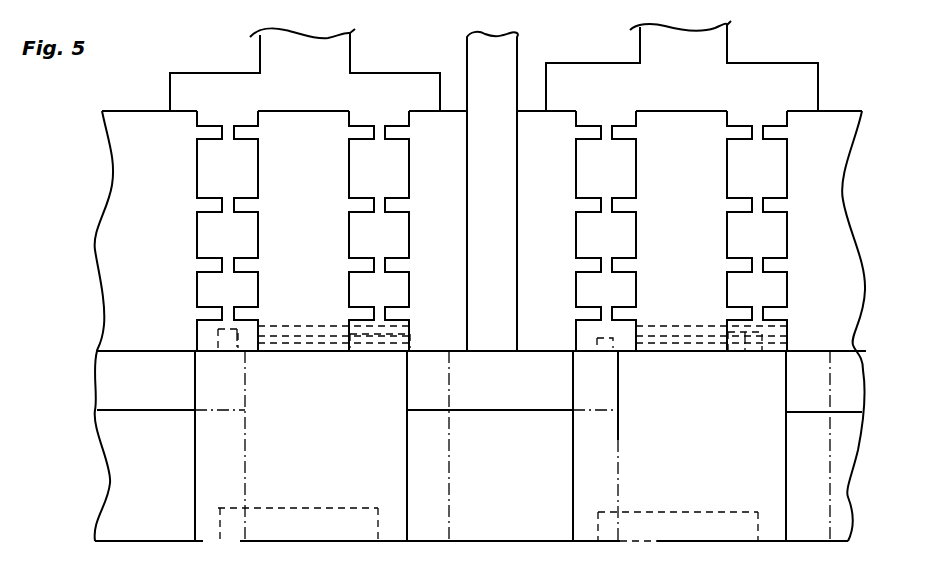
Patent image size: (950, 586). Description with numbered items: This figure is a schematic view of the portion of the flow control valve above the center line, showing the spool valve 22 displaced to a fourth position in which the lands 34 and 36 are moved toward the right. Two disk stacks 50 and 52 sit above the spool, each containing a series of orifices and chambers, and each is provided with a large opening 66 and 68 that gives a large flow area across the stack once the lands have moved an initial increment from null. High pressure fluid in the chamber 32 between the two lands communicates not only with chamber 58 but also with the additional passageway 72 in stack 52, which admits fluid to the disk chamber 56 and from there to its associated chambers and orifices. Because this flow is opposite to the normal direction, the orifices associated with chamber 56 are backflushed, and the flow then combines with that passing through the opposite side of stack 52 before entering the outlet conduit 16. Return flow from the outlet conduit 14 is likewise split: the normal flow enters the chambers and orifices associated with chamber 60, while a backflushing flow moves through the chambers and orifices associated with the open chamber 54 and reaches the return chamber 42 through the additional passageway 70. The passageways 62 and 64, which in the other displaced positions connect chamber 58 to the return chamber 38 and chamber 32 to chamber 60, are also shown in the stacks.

The outlet conduit 14 is at (355, 54).
The outlet conduit 16 is at (730, 48).
The spool valve 22 is at (529, 511).
The chamber 32 is at (547, 393).
The land 34 is at (245, 434).
The land 36 is at (618, 444).
The return chamber 38 is at (842, 382).
The return chamber 42 is at (110, 370).
The stack 50 is at (314, 214).
The stack 52 is at (700, 217).
The open chamber 54 is at (398, 336).
The disk chamber 56 is at (772, 340).
The chamber 58 is at (575, 338).
The chamber 60 is at (212, 330).
The passageway 62 is at (716, 327).
The passageway 64 is at (275, 345).
The large opening 66 is at (280, 508).
The large opening 68 is at (675, 510).
The passageway 70 is at (328, 326).
The passageway 72 is at (698, 322).